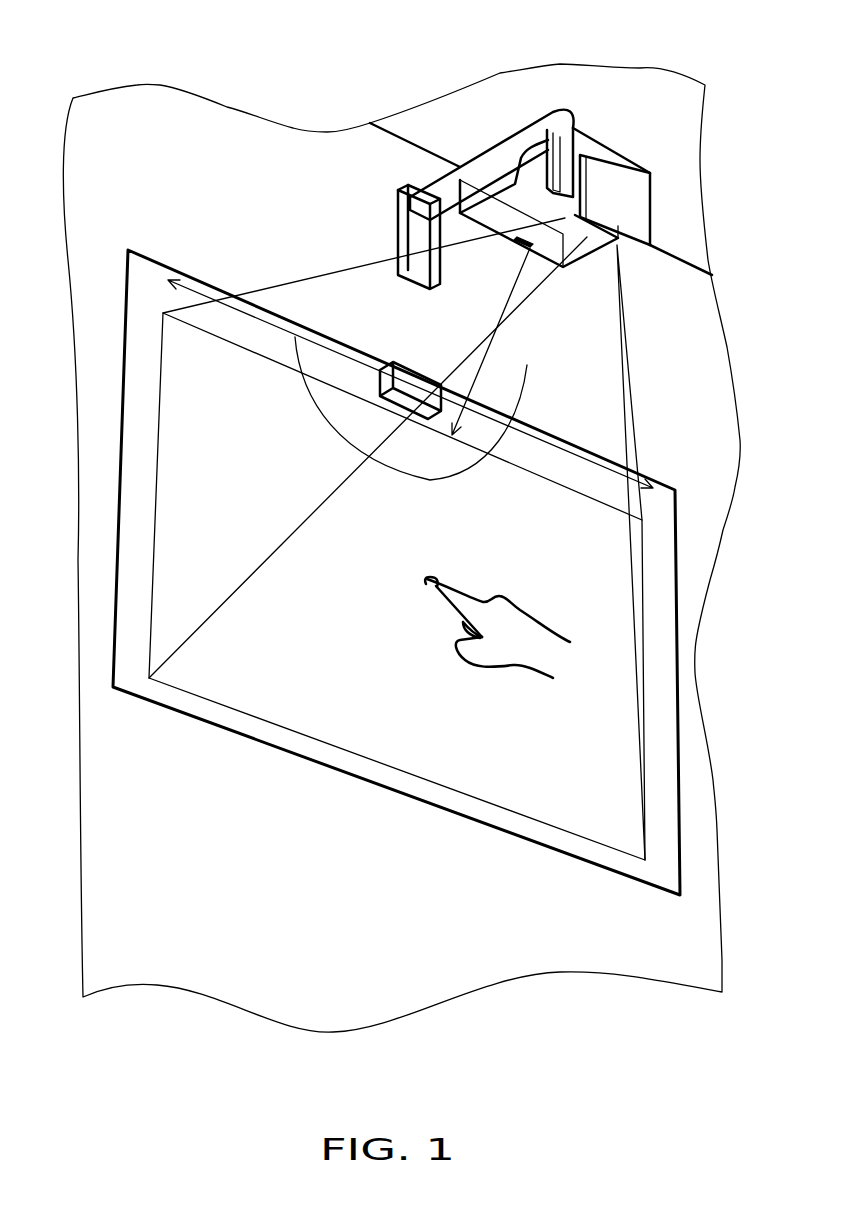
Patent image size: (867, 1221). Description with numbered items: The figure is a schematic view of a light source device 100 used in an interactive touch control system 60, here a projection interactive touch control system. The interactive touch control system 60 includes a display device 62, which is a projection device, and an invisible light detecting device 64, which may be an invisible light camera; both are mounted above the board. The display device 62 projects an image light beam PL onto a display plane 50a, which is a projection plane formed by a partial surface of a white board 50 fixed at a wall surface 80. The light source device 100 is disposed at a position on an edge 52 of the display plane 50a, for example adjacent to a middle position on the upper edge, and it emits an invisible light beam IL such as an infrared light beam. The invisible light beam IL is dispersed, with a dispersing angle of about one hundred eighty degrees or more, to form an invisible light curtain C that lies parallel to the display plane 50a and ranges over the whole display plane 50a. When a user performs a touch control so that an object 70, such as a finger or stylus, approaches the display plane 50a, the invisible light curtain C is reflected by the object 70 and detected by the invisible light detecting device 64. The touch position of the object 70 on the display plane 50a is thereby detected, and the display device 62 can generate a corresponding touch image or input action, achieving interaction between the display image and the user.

The white board 50 is at (455, 572).
The display plane 50a is at (556, 740).
The edge 52 is at (618, 378).
The interactive touch control system 60 is at (461, 145).
The display device 62 is at (637, 208).
The invisible light detecting device 64 is at (564, 163).
The object 70 is at (427, 582).
The wall surface 80 is at (700, 848).
The light source device 100 is at (393, 392).
The invisible light curtain C is at (395, 385).
The image light beam PL is at (376, 371).
The invisible light beam IL is at (476, 271).